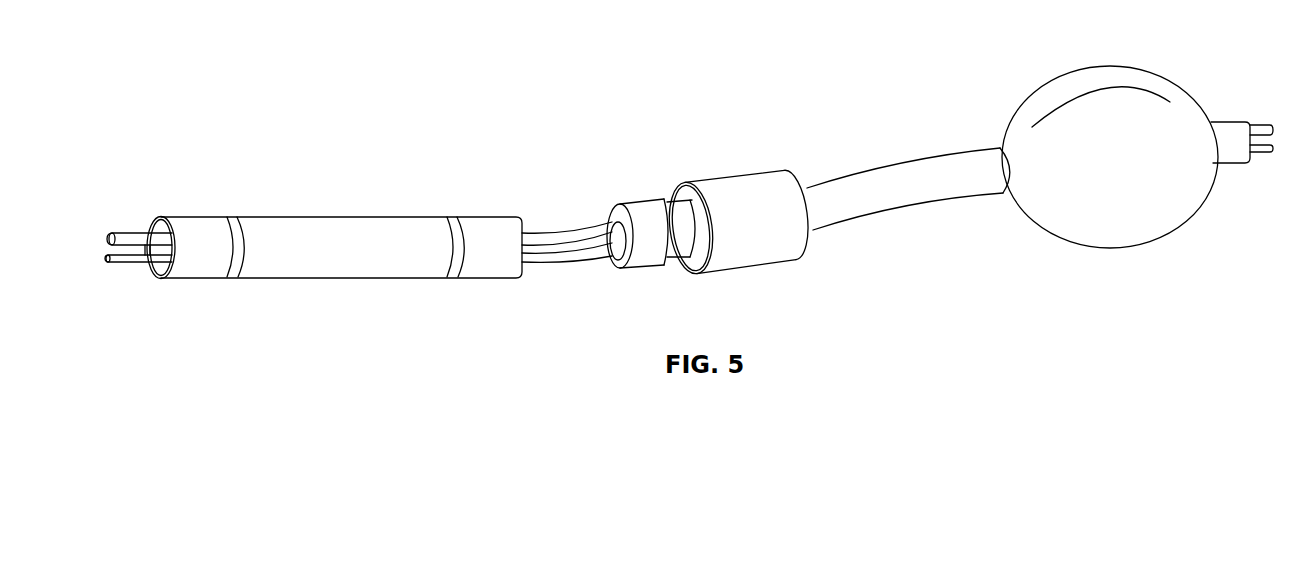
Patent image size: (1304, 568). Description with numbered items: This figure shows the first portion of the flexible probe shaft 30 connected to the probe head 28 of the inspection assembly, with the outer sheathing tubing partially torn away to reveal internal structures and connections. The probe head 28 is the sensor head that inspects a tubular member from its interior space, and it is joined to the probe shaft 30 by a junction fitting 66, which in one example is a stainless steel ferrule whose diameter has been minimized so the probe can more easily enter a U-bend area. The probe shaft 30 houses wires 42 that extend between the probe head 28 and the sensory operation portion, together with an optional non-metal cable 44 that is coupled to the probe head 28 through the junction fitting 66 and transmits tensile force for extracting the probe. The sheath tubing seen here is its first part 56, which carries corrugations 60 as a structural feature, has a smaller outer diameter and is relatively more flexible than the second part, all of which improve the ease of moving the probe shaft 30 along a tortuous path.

The probe head 28 is at (1011, 44).
The probe shaft 30 is at (320, 119).
The wire 42 is at (120, 235).
The non-metal cable 44 is at (128, 266).
The first part 56 is at (337, 275).
The corrugations 60 is at (232, 218).
The junction fitting 66 is at (645, 184).